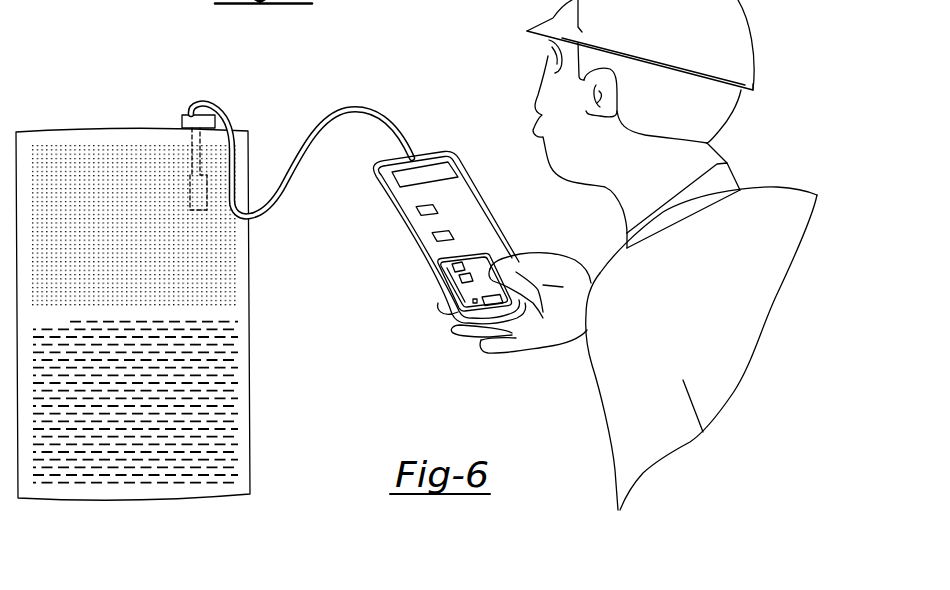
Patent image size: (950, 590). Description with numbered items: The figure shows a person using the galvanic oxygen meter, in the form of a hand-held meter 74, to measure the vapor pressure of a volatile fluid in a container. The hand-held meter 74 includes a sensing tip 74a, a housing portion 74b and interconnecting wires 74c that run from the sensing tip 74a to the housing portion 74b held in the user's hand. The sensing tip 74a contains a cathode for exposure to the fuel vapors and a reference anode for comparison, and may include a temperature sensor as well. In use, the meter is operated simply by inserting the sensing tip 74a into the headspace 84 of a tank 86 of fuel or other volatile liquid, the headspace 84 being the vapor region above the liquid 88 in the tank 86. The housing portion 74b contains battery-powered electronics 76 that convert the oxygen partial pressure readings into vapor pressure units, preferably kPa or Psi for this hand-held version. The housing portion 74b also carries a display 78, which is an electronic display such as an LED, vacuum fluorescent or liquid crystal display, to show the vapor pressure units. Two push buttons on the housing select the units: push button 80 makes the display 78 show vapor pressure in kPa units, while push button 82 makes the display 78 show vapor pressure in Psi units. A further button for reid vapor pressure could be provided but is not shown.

The hand-held meter 74 is at (418, 226).
The sensing tip 74a is at (193, 186).
The housing portion 74b is at (473, 203).
The interconnecting wires 74c is at (345, 108).
The battery-powered electronics 76 is at (470, 285).
The display 78 is at (428, 172).
The push button 80 is at (415, 208).
The push button 82 is at (430, 235).
The headspace 84 is at (105, 160).
The tank 86 is at (252, 342).
The liquid 88 is at (213, 410).